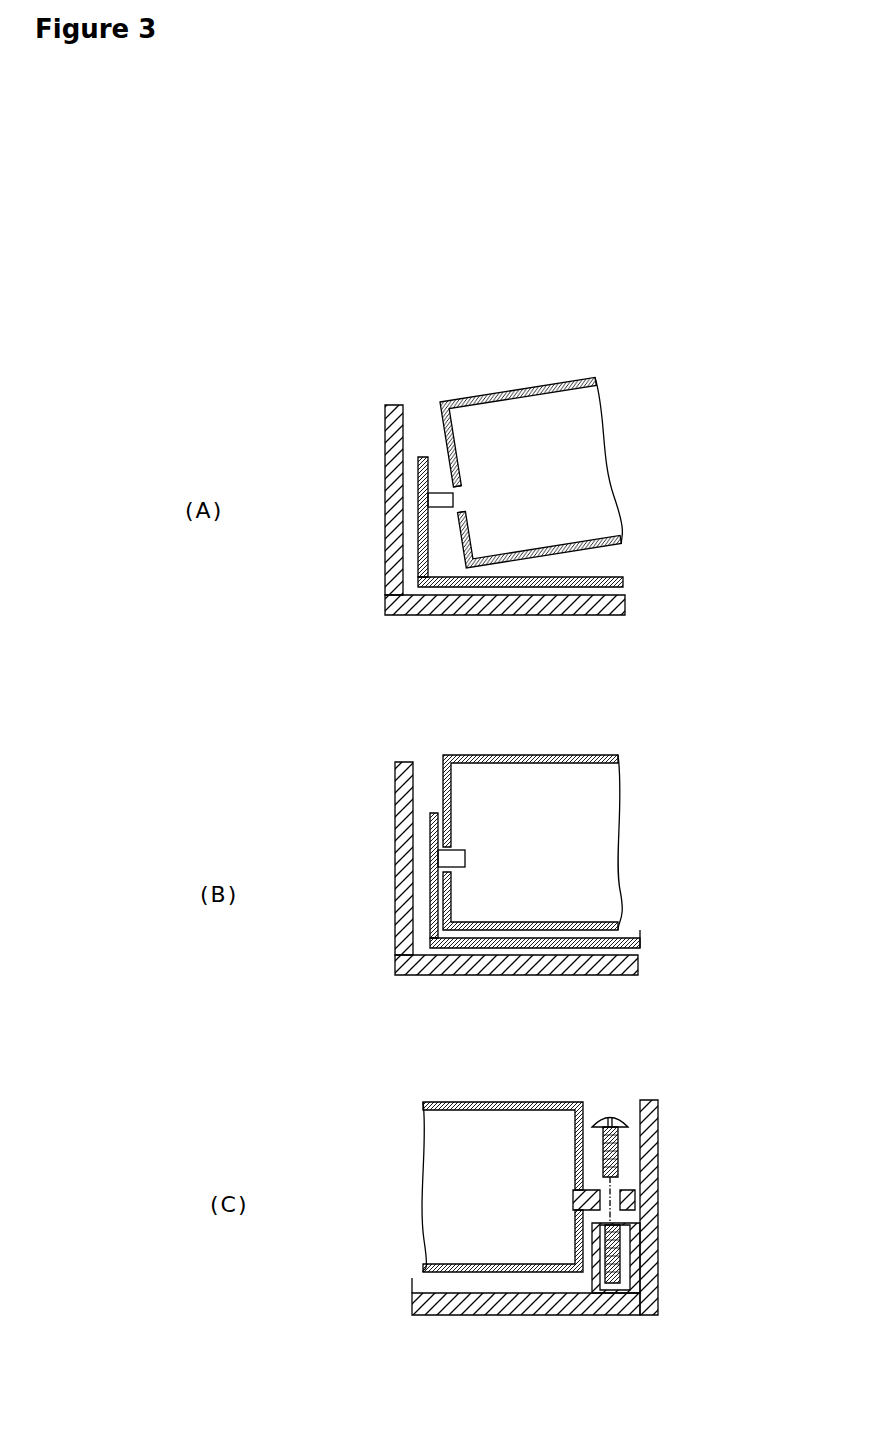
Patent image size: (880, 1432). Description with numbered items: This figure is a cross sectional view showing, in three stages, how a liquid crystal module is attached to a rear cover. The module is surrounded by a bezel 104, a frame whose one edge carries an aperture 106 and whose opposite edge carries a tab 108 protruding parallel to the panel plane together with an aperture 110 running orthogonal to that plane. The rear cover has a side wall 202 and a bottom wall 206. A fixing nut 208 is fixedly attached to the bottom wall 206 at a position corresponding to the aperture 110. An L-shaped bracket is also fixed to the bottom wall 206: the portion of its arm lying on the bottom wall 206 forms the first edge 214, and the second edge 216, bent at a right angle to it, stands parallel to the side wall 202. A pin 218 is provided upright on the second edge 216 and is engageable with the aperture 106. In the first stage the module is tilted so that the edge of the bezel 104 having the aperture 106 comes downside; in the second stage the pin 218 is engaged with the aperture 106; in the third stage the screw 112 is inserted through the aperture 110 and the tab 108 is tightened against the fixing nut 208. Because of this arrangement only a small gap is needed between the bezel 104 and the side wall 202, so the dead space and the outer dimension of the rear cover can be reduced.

The bezel 104 is at (520, 390).
The aperture 106 is at (457, 492).
The tab 108 is at (638, 1197).
The aperture 110 is at (620, 1190).
The screw 112 is at (605, 1114).
The side wall 202 is at (393, 418).
The bottom wall 206 is at (535, 615).
The fixing nut 208 is at (653, 1248).
The first edge 214 is at (618, 573).
The second edge 216 is at (422, 532).
The pin 218 is at (417, 498).